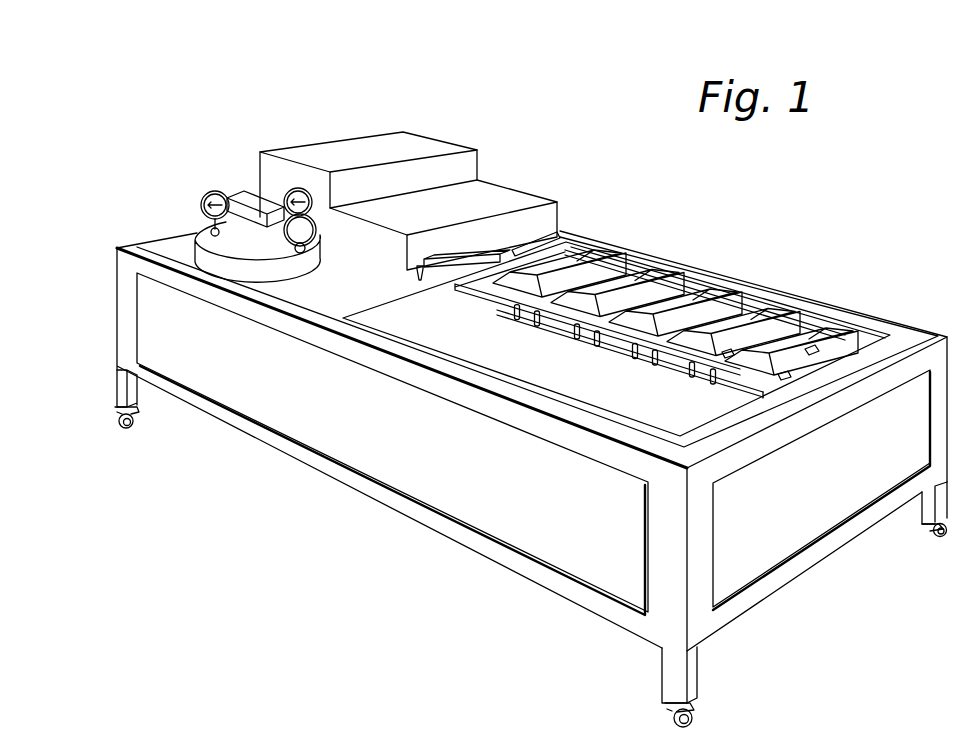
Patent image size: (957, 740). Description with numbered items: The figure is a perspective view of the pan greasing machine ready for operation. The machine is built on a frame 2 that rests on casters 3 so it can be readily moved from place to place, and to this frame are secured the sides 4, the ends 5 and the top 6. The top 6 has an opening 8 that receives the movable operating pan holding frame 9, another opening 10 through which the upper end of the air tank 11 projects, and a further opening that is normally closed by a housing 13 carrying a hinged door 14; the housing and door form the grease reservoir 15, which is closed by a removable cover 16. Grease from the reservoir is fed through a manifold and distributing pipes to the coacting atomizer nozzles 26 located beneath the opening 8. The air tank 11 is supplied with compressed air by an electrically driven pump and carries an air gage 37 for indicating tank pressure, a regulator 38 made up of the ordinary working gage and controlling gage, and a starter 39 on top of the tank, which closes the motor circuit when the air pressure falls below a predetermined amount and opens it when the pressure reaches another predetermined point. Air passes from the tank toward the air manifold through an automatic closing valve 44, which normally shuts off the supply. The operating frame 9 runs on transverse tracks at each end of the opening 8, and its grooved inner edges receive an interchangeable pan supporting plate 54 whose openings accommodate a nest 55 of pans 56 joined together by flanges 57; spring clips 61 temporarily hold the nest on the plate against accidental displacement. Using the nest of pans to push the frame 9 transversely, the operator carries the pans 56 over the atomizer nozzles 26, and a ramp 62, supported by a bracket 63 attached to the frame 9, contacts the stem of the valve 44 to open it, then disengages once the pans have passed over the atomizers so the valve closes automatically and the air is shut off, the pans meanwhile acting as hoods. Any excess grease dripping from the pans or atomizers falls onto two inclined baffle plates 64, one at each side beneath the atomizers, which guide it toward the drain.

The frame 2 is at (112, 385).
The casters 3 is at (117, 427).
The sides 4 is at (345, 448).
The ends 5 is at (793, 543).
The top 6 is at (160, 248).
The opening 8 is at (787, 433).
The operating pan holding frame 9 is at (873, 340).
The opening 10 is at (305, 275).
The air tank 11 is at (243, 273).
The housing 13 is at (513, 220).
The door 14 is at (490, 190).
The grease reservoir 15 is at (472, 158).
The removable cover 16 is at (413, 138).
The atomizer nozzles 26 is at (633, 368).
The air gage 37 is at (202, 205).
The regulator 38 is at (313, 232).
The starter 39 is at (247, 197).
The automatic closing valve 44 is at (418, 277).
The pan supporting plate 54 is at (780, 373).
The nest 55 is at (813, 353).
The pans 56 is at (830, 318).
The flanges 57 is at (728, 358).
The spring clips 61 is at (508, 287).
The ramp 62 is at (543, 235).
The bracket 63 is at (587, 242).
The baffle plates 64 is at (730, 403).